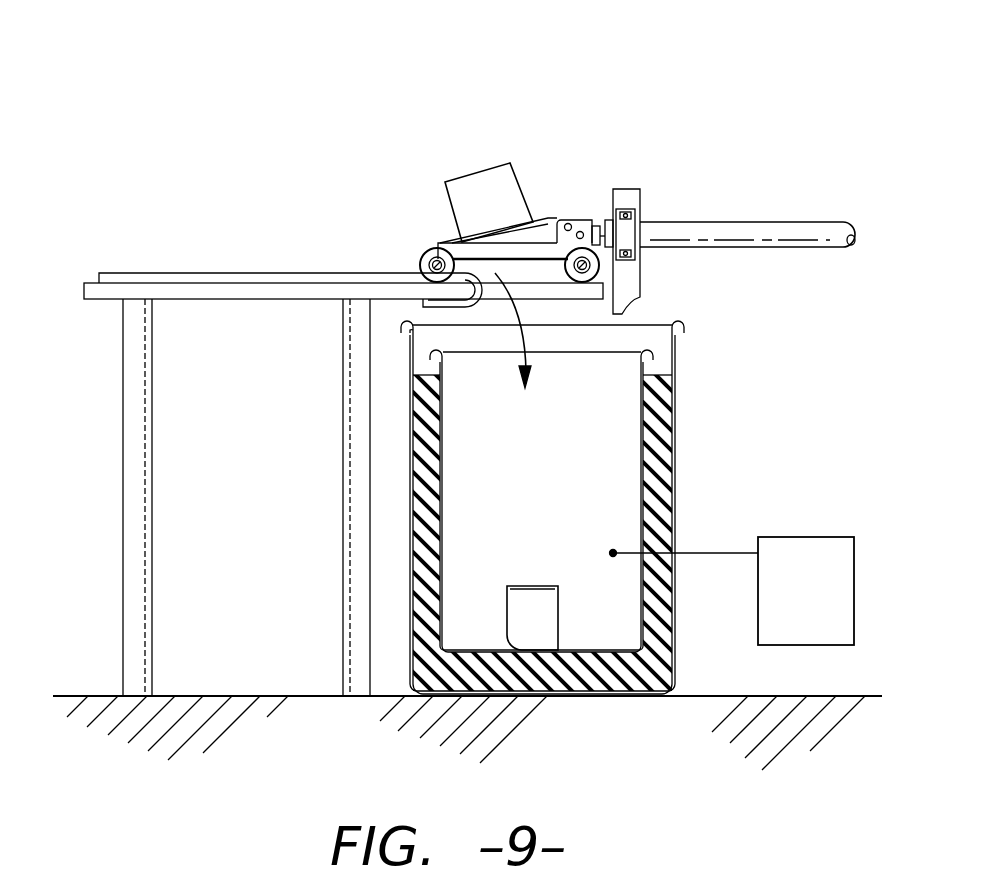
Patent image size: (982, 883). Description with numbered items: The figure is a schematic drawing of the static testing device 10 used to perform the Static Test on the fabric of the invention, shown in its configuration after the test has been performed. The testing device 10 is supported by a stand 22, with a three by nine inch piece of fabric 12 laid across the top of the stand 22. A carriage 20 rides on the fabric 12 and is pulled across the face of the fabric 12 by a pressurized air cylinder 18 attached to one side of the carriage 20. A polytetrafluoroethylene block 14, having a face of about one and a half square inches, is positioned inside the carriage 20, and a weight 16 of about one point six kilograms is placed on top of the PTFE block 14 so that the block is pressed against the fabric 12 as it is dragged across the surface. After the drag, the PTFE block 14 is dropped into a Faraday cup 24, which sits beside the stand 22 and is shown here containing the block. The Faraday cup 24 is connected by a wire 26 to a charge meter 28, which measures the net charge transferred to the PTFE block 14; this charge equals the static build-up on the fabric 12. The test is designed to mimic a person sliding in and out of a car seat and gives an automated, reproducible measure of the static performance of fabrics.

The testing device 10 is at (556, 106).
The fabric 12 is at (212, 275).
The PTFE block 14 is at (530, 585).
The weight 16 is at (462, 176).
The pressurized air cylinder 18 is at (707, 222).
The carriage 20 is at (567, 217).
The stand 22 is at (123, 428).
The Faraday cup 24 is at (675, 437).
The wire 26 is at (698, 553).
The charge meter 28 is at (807, 537).